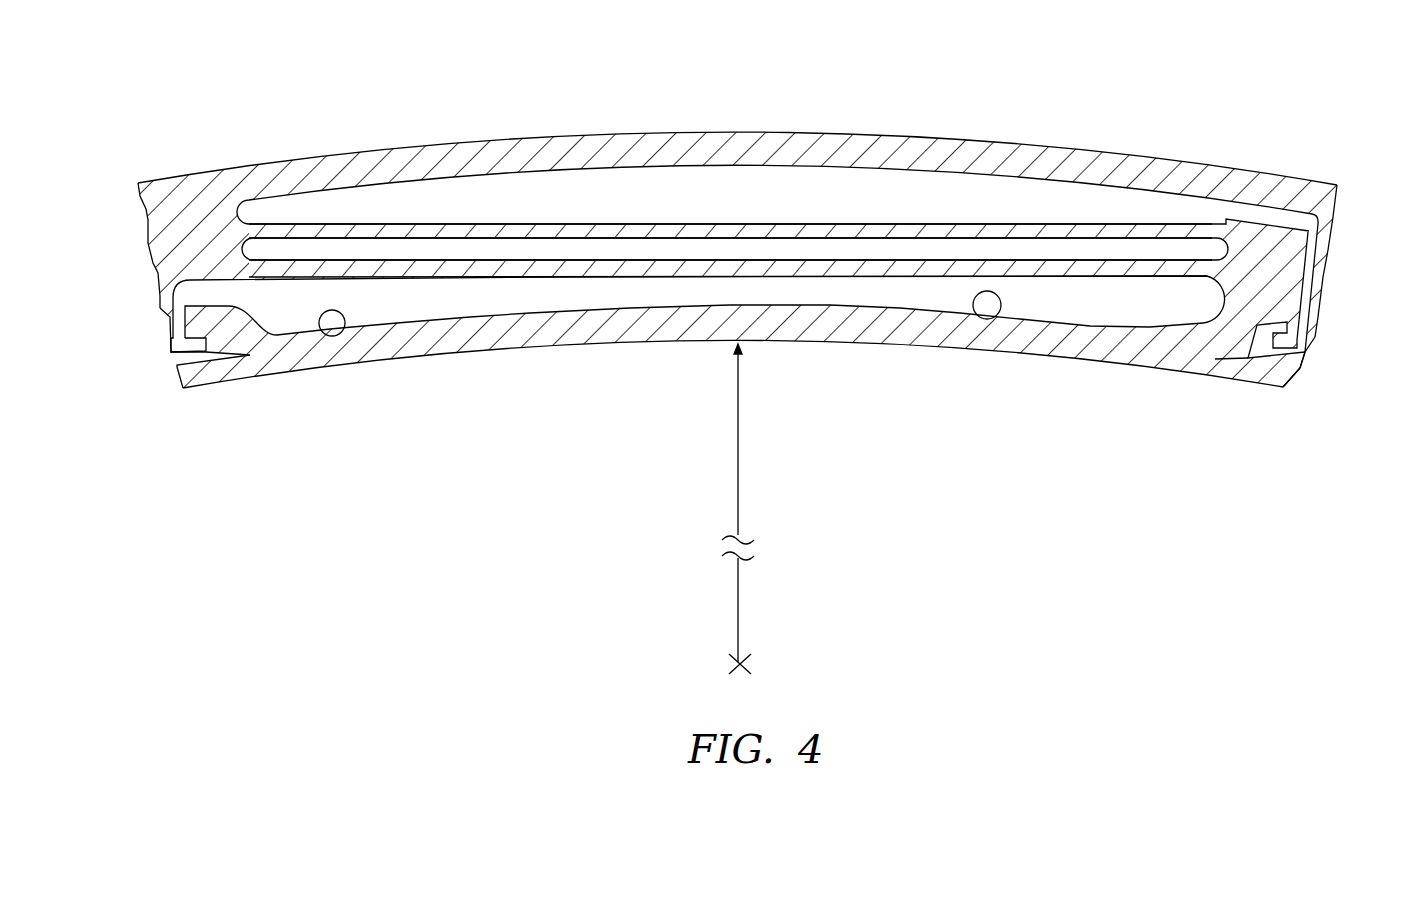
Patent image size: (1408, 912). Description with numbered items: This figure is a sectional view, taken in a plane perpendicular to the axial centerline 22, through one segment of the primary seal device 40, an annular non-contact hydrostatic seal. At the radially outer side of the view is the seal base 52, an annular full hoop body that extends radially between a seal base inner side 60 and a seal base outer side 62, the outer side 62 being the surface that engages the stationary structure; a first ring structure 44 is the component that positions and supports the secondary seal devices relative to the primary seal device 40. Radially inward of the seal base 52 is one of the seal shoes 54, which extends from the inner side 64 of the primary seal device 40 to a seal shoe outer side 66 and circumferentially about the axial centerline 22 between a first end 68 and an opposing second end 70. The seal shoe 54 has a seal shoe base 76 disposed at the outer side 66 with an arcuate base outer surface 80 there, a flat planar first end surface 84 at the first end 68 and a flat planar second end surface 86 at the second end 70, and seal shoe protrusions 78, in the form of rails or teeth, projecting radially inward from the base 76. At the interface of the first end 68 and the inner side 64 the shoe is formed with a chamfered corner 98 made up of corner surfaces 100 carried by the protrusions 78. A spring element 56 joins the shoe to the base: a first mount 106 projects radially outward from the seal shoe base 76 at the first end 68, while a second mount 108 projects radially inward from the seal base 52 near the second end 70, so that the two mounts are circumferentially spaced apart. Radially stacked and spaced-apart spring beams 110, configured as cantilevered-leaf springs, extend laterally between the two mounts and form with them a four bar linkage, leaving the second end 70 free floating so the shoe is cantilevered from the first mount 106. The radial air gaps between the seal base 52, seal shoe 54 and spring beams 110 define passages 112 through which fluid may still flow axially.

The primary seal device 40 is at (726, 346).
The seal base 52 is at (918, 135).
The spring element 56 is at (774, 157).
The passages 112 is at (587, 243).
The spring beams 110 is at (850, 222).
The seal base inner side 60 is at (378, 186).
The seal base outer side 62 is at (188, 176).
The second mount 108 is at (167, 245).
The first mount 106 is at (1297, 270).
The first ring structure 44 is at (733, 366).
The seal shoes 54 is at (669, 345).
The seal shoe base 76 is at (977, 316).
The seal shoe protrusions 78 is at (997, 355).
The seal shoe outer side 66 is at (342, 367).
The base outer surface 80 is at (346, 328).
The inner side of the primary seal device 64 is at (188, 383).
The seal shoe second end 70 is at (166, 373).
The second end surface 86 is at (205, 388).
The seal shoe first end 68 is at (1354, 390).
The first end surface 84 is at (1303, 373).
The chamfered corner 98 is at (1295, 398).
The corner surfaces 100 is at (1288, 390).
The axial centerline 22 is at (745, 668).